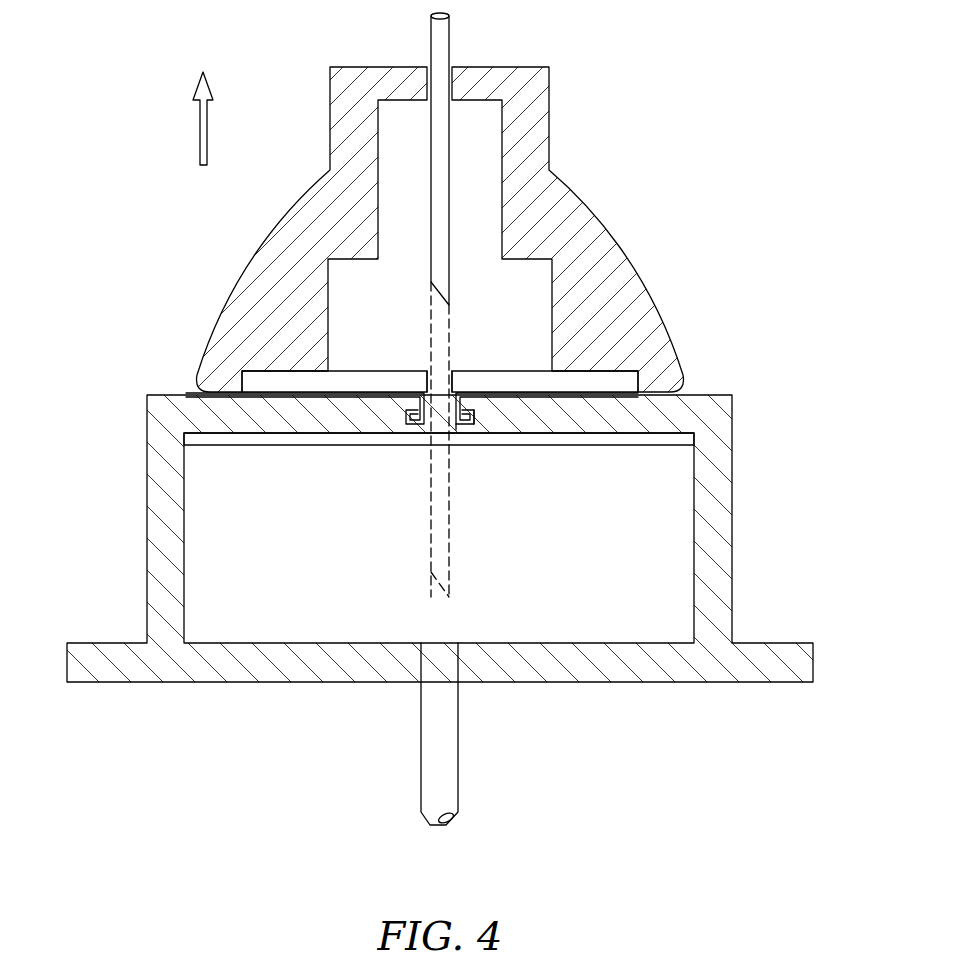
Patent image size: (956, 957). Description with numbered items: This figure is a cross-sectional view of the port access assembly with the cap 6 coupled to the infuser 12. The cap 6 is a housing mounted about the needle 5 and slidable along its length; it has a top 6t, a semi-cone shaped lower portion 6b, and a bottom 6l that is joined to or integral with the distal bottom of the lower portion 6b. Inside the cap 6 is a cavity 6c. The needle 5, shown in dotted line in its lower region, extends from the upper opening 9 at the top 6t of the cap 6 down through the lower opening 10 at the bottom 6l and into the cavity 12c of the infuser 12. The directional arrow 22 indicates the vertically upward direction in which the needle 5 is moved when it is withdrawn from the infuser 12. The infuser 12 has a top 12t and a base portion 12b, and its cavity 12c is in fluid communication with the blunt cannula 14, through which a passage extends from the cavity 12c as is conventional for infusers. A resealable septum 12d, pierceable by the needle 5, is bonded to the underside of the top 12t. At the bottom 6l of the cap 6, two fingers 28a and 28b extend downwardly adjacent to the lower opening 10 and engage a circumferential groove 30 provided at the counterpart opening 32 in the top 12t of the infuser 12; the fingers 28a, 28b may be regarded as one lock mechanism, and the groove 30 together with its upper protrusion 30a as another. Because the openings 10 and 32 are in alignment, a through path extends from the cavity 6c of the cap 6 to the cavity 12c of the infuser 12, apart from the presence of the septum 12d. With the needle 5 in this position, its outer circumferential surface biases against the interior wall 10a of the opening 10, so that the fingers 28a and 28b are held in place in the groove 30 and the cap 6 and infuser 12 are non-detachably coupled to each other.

The needle 5 is at (449, 41).
The upper opening 9 is at (443, 78).
The cap 6 is at (632, 263).
The top portion 6t is at (372, 68).
The lower portion 6b is at (636, 313).
The cavity 6c is at (486, 191).
The bottom portion 6l is at (612, 378).
The directional arrow 22 is at (200, 131).
The lower opening 10 is at (437, 368).
The interior wall 10a is at (448, 395).
The infuser 12 is at (147, 500).
The top portion 12t is at (296, 418).
The base portion 12b is at (66, 665).
The cavity 12c is at (638, 540).
The resealable septum 12d is at (280, 438).
The finger 28a is at (418, 420).
The finger 28b is at (462, 422).
The circumferential groove 30 is at (475, 413).
The upper protrusion 30a is at (478, 405).
The counterpart opening 32 is at (445, 430).
The blunt cannula 14 is at (452, 753).